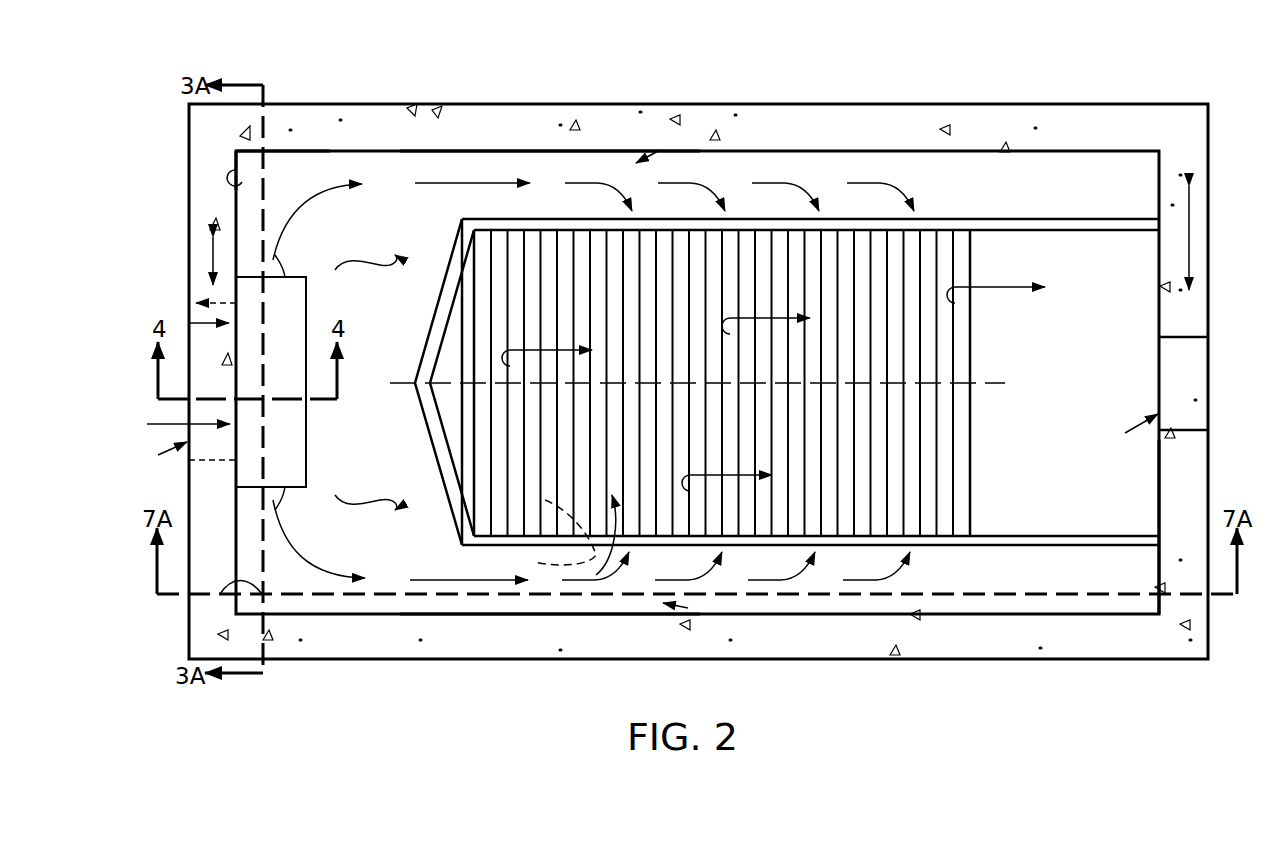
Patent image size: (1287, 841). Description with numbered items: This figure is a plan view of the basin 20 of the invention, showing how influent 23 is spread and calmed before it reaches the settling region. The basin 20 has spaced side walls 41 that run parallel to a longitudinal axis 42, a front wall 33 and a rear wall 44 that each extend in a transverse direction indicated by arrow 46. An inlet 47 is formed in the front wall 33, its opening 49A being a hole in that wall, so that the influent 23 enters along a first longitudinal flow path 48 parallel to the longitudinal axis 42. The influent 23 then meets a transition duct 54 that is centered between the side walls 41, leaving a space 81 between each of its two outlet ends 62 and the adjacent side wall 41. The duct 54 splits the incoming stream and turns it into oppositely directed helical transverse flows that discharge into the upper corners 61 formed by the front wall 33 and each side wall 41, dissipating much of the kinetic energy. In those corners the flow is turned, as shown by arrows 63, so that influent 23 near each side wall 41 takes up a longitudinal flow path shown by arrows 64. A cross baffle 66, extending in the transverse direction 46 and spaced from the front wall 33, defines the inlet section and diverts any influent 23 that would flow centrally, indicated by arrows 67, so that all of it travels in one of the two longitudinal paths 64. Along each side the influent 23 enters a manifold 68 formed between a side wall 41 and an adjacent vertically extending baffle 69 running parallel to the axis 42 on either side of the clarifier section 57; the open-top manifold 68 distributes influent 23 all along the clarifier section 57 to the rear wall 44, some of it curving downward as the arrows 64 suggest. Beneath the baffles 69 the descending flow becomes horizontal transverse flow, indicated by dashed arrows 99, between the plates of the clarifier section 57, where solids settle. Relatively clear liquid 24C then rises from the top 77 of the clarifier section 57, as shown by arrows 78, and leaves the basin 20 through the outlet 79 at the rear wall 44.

The basin 20 is at (1005, 103).
The front wall 33 is at (236, 165).
The space 81 is at (255, 172).
The transverse direction arrow 46 is at (212, 268).
The first longitudinal flow path 48 is at (193, 322).
The influent 23 is at (156, 422).
The inlet 47 is at (153, 456).
The opening 49A is at (191, 462).
The upper corners 61 is at (273, 152).
The turning flow arrows 63 is at (340, 185).
The outlet ends 62 is at (285, 277).
The central flow arrows 67 is at (335, 270).
The longitudinal flow paths 64 is at (436, 183).
The side walls 41 is at (510, 148).
The manifolds 68 is at (660, 150).
The vertically extending baffle 69 is at (977, 228).
The clear liquid 24C is at (545, 350).
The clarified liquid flow arrows 78 is at (757, 318).
The longitudinal axis 42 is at (1005, 383).
The top of the clarifier section 77 is at (960, 455).
The outlet 79 is at (1178, 430).
The rear wall 44 is at (1158, 510).
The cross baffle 66 is at (428, 350).
The transition duct 54 is at (307, 432).
The horizontal transverse flow 99 is at (564, 526).
The clarifier section 57 is at (945, 520).